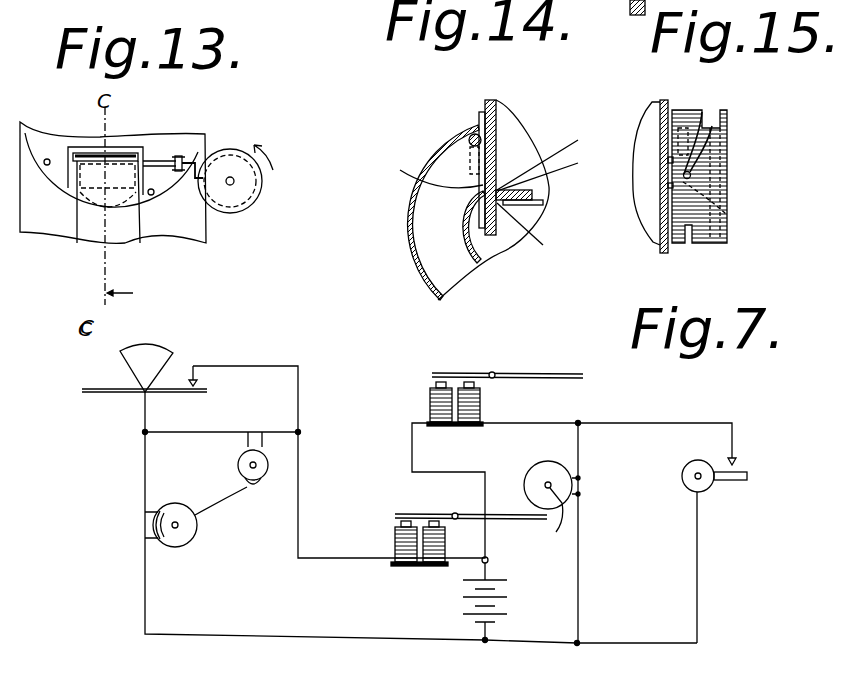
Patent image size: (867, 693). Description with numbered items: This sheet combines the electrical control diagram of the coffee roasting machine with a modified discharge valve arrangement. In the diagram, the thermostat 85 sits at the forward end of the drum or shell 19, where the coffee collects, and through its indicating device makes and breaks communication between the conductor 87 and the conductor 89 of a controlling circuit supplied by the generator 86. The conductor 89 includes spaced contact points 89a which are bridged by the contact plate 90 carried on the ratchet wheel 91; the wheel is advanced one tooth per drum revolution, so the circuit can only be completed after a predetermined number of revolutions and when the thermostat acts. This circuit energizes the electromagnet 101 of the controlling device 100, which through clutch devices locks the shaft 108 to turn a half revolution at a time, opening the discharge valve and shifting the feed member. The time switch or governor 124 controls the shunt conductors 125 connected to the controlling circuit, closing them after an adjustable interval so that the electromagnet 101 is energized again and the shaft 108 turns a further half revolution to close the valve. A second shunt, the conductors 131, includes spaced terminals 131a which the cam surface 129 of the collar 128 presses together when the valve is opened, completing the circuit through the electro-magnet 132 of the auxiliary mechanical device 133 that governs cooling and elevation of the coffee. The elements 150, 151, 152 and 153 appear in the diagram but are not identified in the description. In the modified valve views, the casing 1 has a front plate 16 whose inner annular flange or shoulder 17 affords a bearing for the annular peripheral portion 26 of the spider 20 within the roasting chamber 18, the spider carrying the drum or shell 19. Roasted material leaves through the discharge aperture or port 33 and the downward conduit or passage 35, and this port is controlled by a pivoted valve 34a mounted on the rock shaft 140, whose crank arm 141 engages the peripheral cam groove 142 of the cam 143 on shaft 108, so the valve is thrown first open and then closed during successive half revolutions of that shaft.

In FIG. 13, the casing 1 is at (190, 232).
In FIG. 15, the casing 1 is at (650, 242).
In FIG. 13, the front plate 16 is at (128, 138).
In FIG. 14, the front plate 16 is at (492, 98).
In FIG. 15, the front plate 16 is at (679, 100).
In FIG. 14, the annular flange or shoulder 17 is at (520, 233).
In FIG. 14, the roasting chamber 18 is at (512, 145).
In FIG. 14, the drum or shell 19 is at (543, 203).
In FIG. 14, the spider 20 is at (554, 170).
In FIG. 14, the annular peripheral portion 26 is at (549, 156).
In FIG. 13, the discharge aperture or port 33 is at (96, 163).
In FIG. 14, the discharge aperture or port 33 is at (505, 117).
In FIG. 14, the pivoted valve 34a is at (430, 171).
In FIG. 13, the conduit or passage 35 is at (100, 228).
In FIG. 14, the conduit or passage 35 is at (425, 252).
In FIG. 7, the thermostat 85 is at (189, 393).
In FIG. 7, the generator 86 is at (465, 603).
In FIG. 7, the conductor 87 is at (254, 366).
In FIG. 7, the conductor 89 is at (145, 457).
In FIG. 7, the contact points 89a is at (145, 538).
In FIG. 7, the contact plate 90 is at (178, 525).
In FIG. 7, the ratchet wheel 91 is at (221, 501).
In FIG. 7, the controlling device 100 is at (471, 500).
In FIG. 7, the electromagnet 101 is at (393, 544).
In FIG. 13, the shaft 108 is at (234, 181).
In FIG. 7, the shaft 108 is at (256, 463).
In FIG. 7, the time switch or governor 124 is at (710, 488).
In FIG. 7, the conductors 125 is at (700, 424).
In FIG. 7, the collar 128 is at (530, 477).
In FIG. 7, the cam surface 129 is at (566, 468).
In FIG. 7, the conductors 131 is at (583, 448).
In FIG. 7, the spaced terminals 131a is at (572, 486).
In FIG. 7, the electro-magnet 132 is at (483, 402).
In FIG. 7, the mechanical device 133 is at (507, 352).
In FIG. 13, the rock shaft 140 is at (162, 160).
In FIG. 14, the rock shaft 140 is at (470, 137).
In FIG. 15, the rock shaft 140 is at (701, 111).
In FIG. 13, the crank arm 141 is at (185, 196).
In FIG. 14, the crank arm 141 is at (468, 165).
In FIG. 15, the crank arm 141 is at (691, 175).
In FIG. 13, the peripheral cam groove 142 is at (250, 205).
In FIG. 15, the peripheral cam groove 142 is at (706, 131).
In FIG. 13, the cam 143 is at (232, 150).
In FIG. 15, the cam 143 is at (697, 221).
In FIG. 7, the contact disk 150 is at (268, 472).
In FIG. 7, the contact 151 is at (257, 485).
In FIG. 7, the contact springs 152 is at (262, 445).
In FIG. 7, the conductor 153 is at (172, 432).